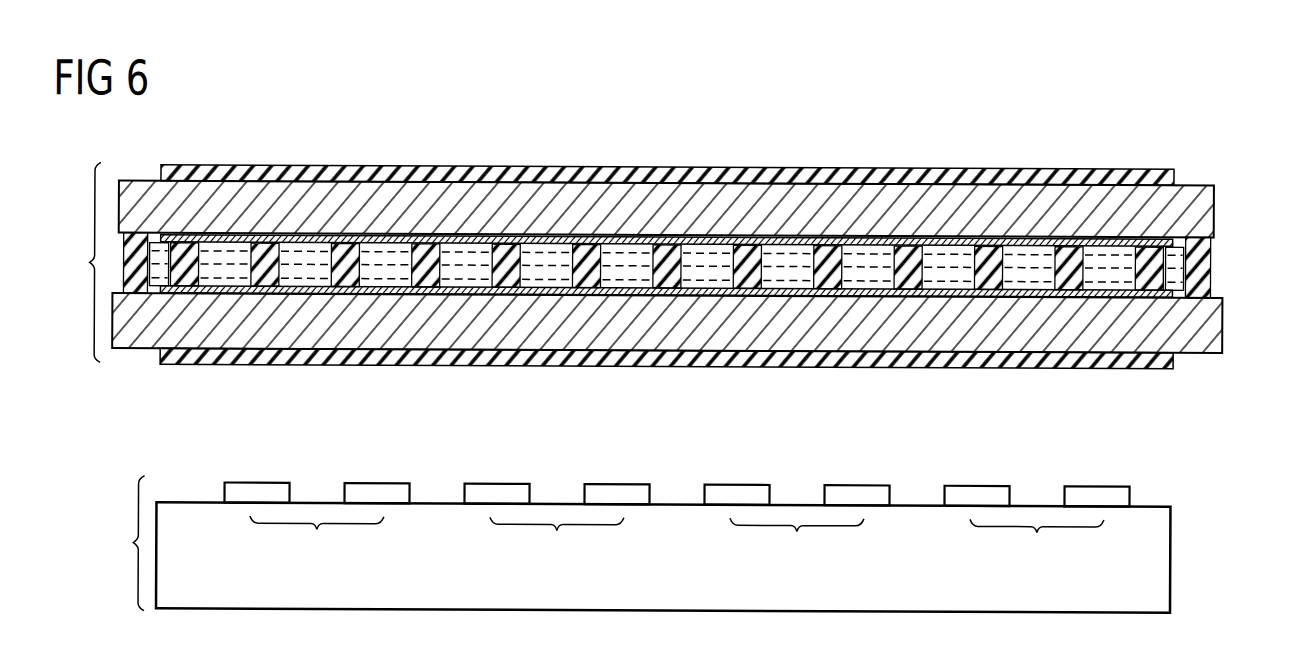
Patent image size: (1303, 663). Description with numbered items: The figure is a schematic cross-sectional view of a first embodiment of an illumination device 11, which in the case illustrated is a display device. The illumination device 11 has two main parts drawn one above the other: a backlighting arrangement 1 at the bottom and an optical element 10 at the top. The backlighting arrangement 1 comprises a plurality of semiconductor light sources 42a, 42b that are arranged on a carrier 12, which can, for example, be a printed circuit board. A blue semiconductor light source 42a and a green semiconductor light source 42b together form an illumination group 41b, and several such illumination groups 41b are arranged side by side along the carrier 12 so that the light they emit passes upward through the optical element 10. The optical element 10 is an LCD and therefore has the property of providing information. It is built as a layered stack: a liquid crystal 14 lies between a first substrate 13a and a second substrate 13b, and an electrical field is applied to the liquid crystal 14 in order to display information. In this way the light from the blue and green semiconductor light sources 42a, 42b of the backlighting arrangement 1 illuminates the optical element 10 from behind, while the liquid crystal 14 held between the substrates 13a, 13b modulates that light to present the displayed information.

The backlighting arrangement 1 is at (130, 543).
The optical element 10 is at (76, 262).
The illumination device 11 is at (1186, 162).
The carrier 12 is at (1171, 556).
The first substrate 13a is at (1208, 323).
The second substrate 13b is at (1198, 198).
The liquid crystal 14 is at (1128, 265).
The illumination group 41b is at (677, 545).
The blue semiconductor light source 42a is at (616, 460).
The green semiconductor light source 42b is at (736, 461).